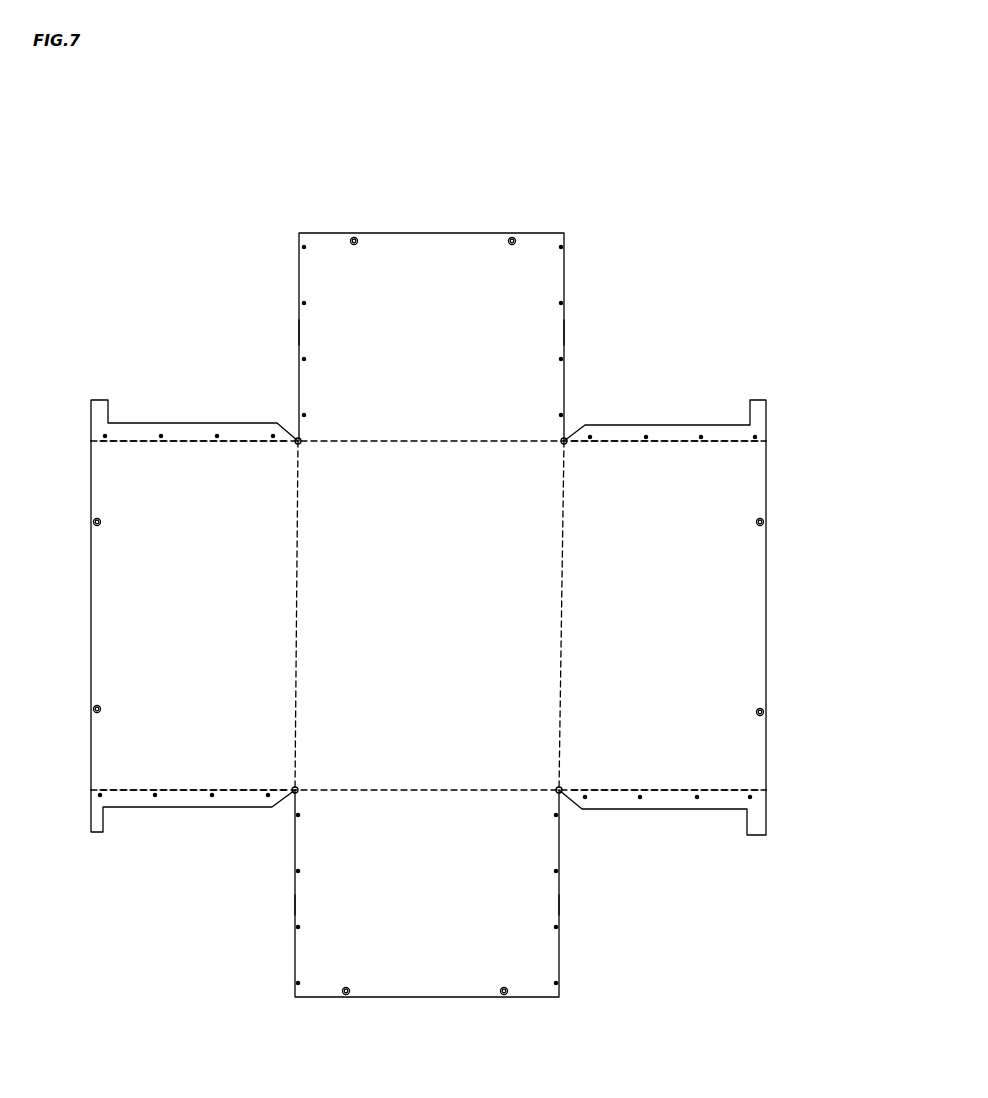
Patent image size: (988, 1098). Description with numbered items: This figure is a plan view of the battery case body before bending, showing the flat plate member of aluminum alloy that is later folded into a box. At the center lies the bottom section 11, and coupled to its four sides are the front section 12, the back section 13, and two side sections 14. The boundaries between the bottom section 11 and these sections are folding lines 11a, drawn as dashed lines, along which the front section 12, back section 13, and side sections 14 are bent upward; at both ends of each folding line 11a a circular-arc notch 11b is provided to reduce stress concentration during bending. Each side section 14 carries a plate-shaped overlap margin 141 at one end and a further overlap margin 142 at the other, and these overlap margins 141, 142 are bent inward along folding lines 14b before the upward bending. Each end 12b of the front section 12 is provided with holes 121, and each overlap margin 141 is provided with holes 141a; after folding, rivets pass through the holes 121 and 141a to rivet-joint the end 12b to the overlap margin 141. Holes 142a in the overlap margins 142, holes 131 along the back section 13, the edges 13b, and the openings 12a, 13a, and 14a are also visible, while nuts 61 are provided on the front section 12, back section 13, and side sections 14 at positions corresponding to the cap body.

The bottom section 11 is at (402, 735).
The folding line 11a is at (458, 438).
The notch 11b is at (298, 446).
The front section 12 is at (428, 982).
The rivet hole 12a is at (344, 986).
The end of the front section 12b is at (295, 905).
The hole 121 is at (297, 816).
The back section 13 is at (452, 255).
The rivet hole 13a is at (352, 246).
The side edge of rear plate 13b is at (299, 330).
The engaging hole 131 is at (303, 246).
The side section 14 is at (91, 583).
The rivet hole 14a is at (100, 526).
The folding line 14b is at (185, 443).
The overlap margin 141 is at (124, 797).
The hole 141a is at (99, 797).
The overlap margin 142 is at (126, 430).
The engaging hole 142a is at (104, 434).
The nut 61 is at (355, 237).